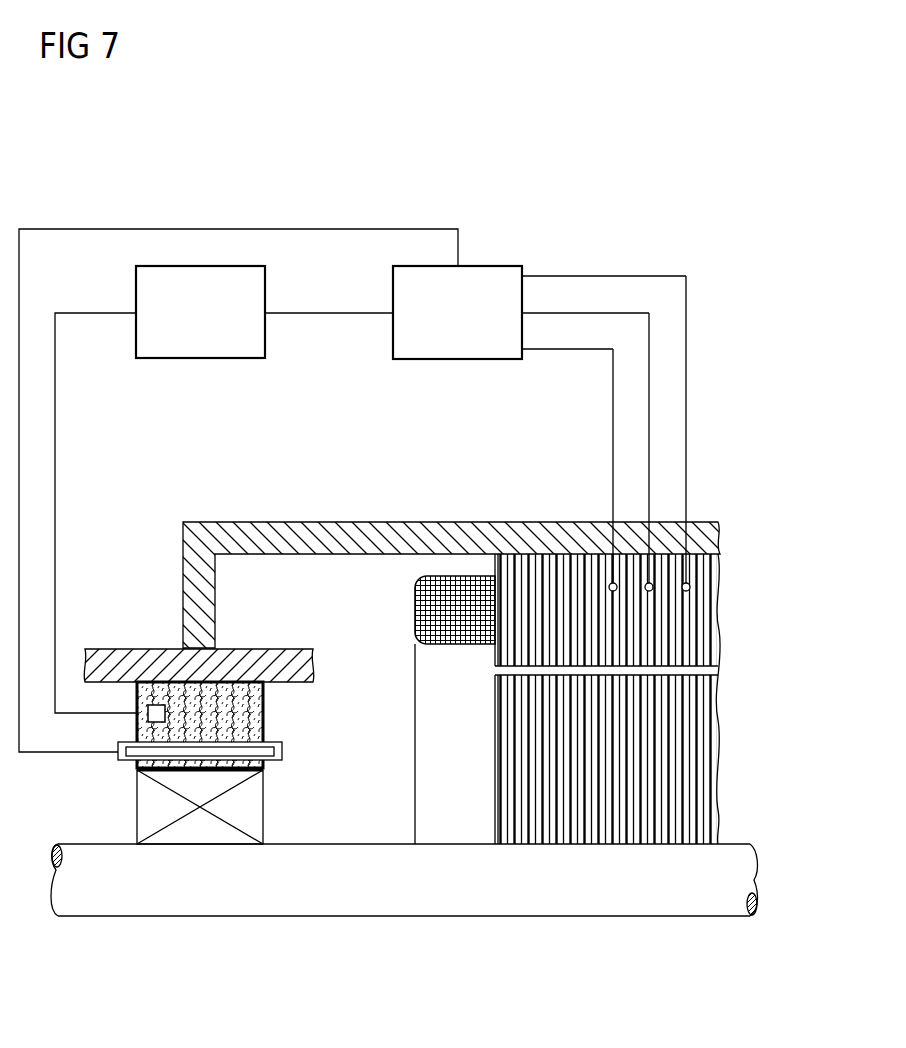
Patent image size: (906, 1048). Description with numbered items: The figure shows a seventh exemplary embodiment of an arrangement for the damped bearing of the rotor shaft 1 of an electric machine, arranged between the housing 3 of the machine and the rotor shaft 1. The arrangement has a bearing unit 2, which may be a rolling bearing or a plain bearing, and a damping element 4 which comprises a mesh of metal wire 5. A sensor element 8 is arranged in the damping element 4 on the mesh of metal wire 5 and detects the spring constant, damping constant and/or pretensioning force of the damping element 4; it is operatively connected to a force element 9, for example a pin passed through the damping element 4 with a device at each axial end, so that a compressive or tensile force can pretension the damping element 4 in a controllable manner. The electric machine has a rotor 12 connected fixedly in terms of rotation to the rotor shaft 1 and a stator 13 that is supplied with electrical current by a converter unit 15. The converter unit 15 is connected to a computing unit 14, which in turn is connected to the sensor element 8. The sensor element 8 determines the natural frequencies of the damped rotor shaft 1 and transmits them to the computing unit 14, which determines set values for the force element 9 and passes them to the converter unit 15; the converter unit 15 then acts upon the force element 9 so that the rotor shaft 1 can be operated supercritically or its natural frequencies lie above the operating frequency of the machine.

The rotor shaft 1 is at (302, 898).
The bearing unit 2 is at (250, 805).
The housing 3 is at (737, 546).
The damping element 4 is at (224, 734).
The mesh of metal wire 5 is at (263, 709).
The sensor element 8 is at (137, 729).
The force element 9 is at (122, 762).
The rotor 12 is at (703, 757).
The stator 13 is at (703, 618).
The computing unit 14 is at (200, 358).
The converter unit 15 is at (458, 359).